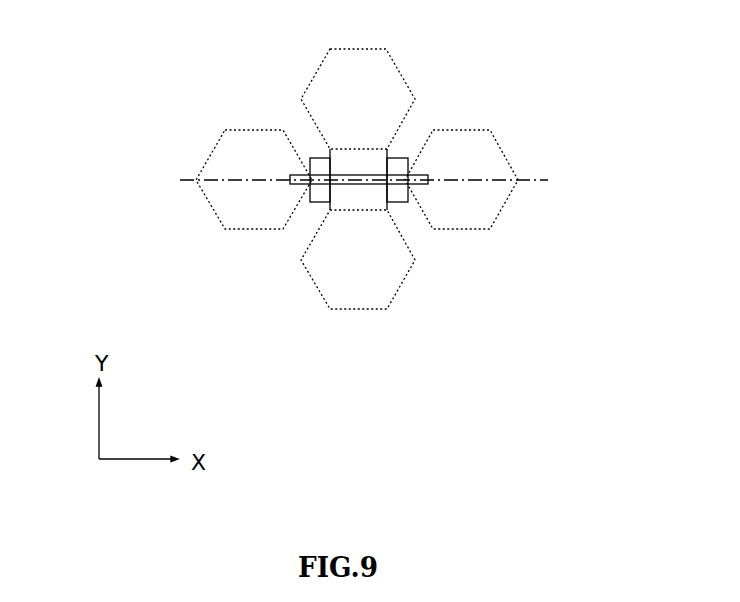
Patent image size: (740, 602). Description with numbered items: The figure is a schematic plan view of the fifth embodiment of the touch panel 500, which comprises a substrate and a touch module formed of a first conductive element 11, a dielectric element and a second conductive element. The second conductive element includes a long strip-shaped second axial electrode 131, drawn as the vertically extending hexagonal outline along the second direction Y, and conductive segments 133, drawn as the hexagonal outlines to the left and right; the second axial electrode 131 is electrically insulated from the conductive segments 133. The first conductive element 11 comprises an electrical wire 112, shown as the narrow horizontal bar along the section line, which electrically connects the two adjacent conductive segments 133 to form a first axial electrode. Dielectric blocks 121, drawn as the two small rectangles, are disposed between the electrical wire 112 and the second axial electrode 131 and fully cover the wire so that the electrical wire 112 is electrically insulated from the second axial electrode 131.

The touch panel 500 is at (79, 61).
The second axial electrode 131 is at (380, 49).
The conductive segment 133 is at (502, 144).
The dielectric block 121 is at (400, 161).
The electrical wire 112 is at (436, 217).
The first conductive element 11 is at (436, 217).